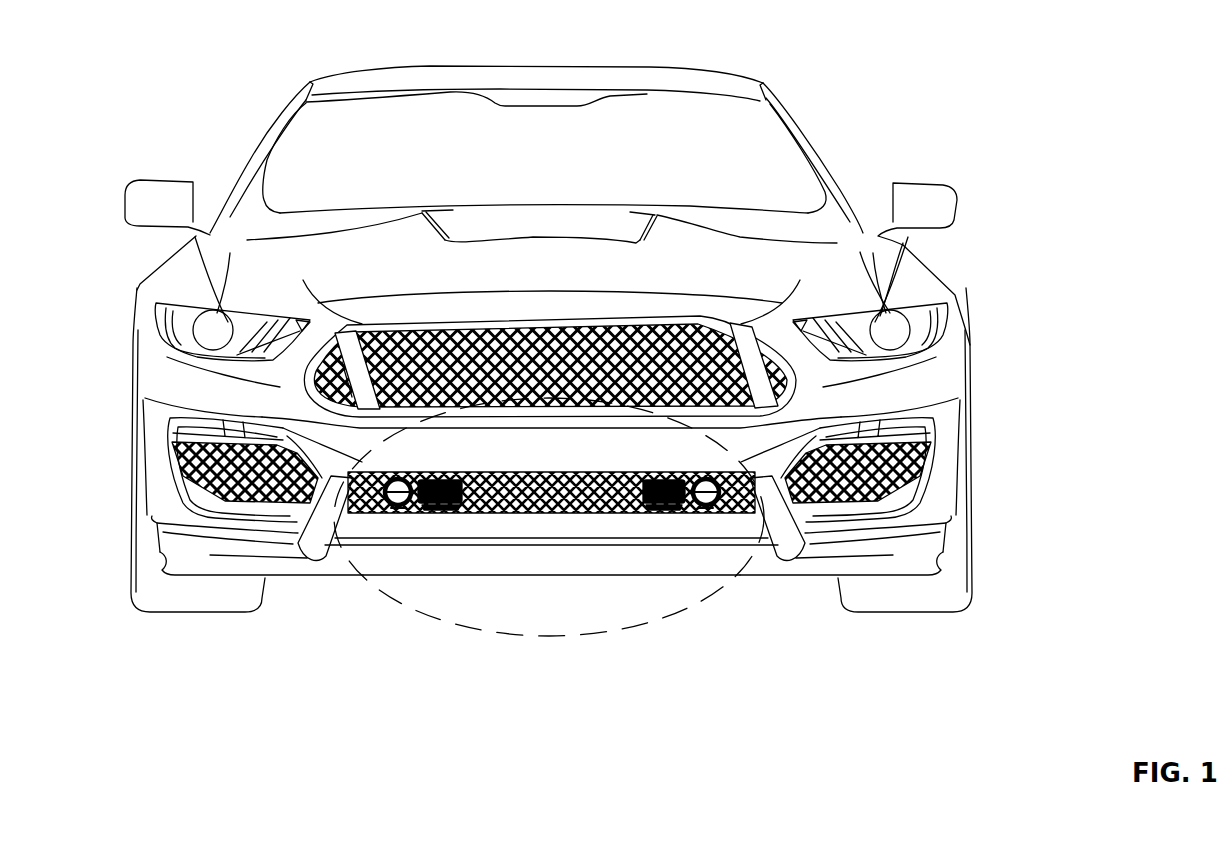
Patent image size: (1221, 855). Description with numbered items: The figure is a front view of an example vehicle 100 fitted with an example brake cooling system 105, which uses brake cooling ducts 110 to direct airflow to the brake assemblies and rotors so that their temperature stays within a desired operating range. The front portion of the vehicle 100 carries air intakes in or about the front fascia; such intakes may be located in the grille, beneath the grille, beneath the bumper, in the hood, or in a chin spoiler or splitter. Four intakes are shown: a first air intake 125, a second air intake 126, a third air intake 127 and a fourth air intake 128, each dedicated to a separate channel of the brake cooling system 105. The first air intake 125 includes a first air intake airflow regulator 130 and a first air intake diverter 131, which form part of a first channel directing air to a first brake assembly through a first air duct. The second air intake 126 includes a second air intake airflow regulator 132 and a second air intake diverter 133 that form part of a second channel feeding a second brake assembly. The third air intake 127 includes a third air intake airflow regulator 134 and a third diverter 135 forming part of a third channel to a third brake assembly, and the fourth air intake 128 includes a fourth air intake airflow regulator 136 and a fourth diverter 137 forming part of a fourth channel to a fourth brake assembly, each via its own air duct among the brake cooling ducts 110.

The vehicle 100 is at (858, 72).
The brake cooling system 105 is at (633, 633).
The brake cooling ducts 110 is at (418, 525).
The first air intake 125 is at (701, 517).
The second air intake 126 is at (660, 517).
The third air intake 127 is at (398, 515).
The fourth air intake 128 is at (438, 517).
The first air intake airflow regulator 130 is at (705, 469).
The first air intake diverter 131 is at (757, 550).
The second air intake airflow regulator 132 is at (648, 473).
The second air intake diverter 133 is at (661, 493).
The third air intake airflow regulator 134 is at (405, 469).
The third diverter 135 is at (388, 512).
The fourth air intake airflow regulator 136 is at (449, 469).
The fourth diverter 137 is at (436, 493).